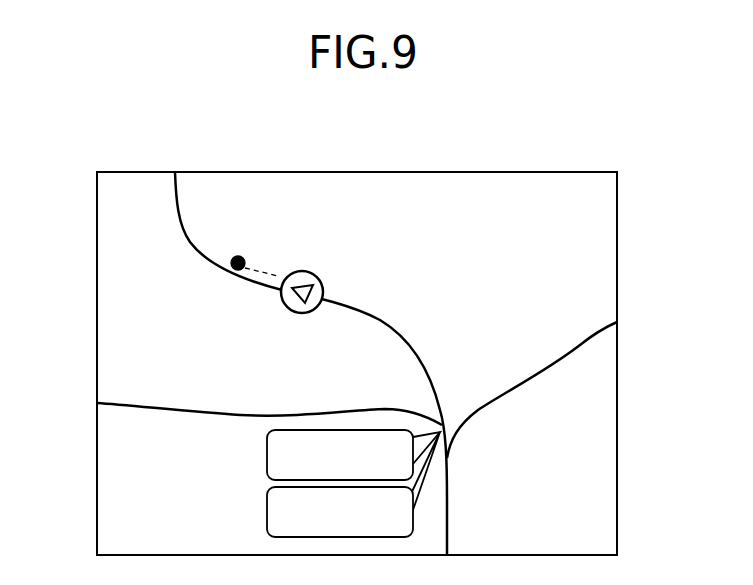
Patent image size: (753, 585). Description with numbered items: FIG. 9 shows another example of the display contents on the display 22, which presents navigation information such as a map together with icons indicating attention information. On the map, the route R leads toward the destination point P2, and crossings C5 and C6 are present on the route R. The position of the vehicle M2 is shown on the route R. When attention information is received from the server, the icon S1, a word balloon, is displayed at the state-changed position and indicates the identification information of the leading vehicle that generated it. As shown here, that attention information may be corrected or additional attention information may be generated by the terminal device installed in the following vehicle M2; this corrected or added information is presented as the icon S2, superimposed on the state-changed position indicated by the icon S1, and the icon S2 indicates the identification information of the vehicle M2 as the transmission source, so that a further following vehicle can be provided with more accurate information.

The display 22 is at (617, 207).
The destination point P2 is at (238, 256).
The route R is at (268, 272).
The vehicle M2 is at (322, 278).
The crossing C6 is at (448, 413).
The crossing C5 is at (455, 470).
The icon S1 is at (267, 450).
The icon S2 is at (267, 507).